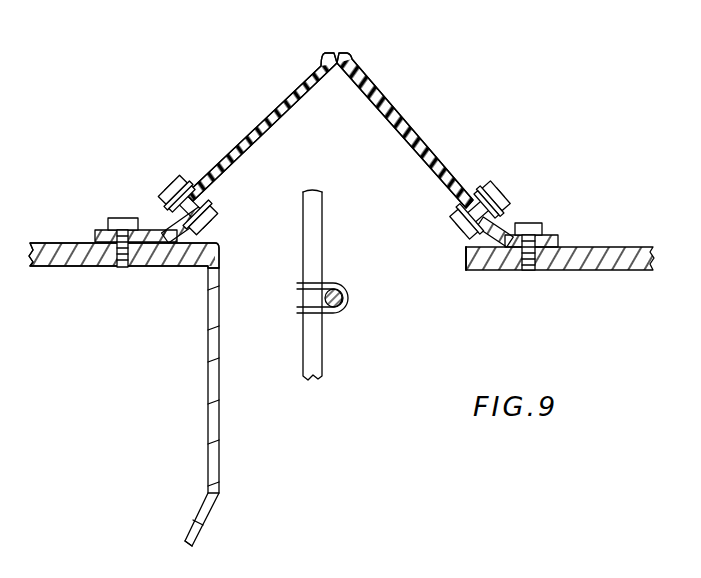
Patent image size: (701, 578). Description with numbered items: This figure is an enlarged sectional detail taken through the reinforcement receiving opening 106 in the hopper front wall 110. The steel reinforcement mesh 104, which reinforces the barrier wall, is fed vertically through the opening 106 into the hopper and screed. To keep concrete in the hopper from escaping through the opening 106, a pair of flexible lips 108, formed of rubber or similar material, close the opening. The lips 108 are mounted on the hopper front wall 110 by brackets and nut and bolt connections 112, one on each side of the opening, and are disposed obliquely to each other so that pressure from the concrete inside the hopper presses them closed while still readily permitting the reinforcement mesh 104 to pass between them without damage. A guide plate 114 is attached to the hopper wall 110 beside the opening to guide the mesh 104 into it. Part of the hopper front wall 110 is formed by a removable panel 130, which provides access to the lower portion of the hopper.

The steel reinforcement mesh 104 is at (323, 353).
The reinforcement receiving opening 106 is at (466, 262).
The flexible lips 108 is at (376, 103).
The hopper front wall 110 is at (620, 250).
The brackets and nut and bolt connections 112 is at (156, 225).
The guide plates 114 is at (208, 448).
The removable panel 130 is at (66, 268).